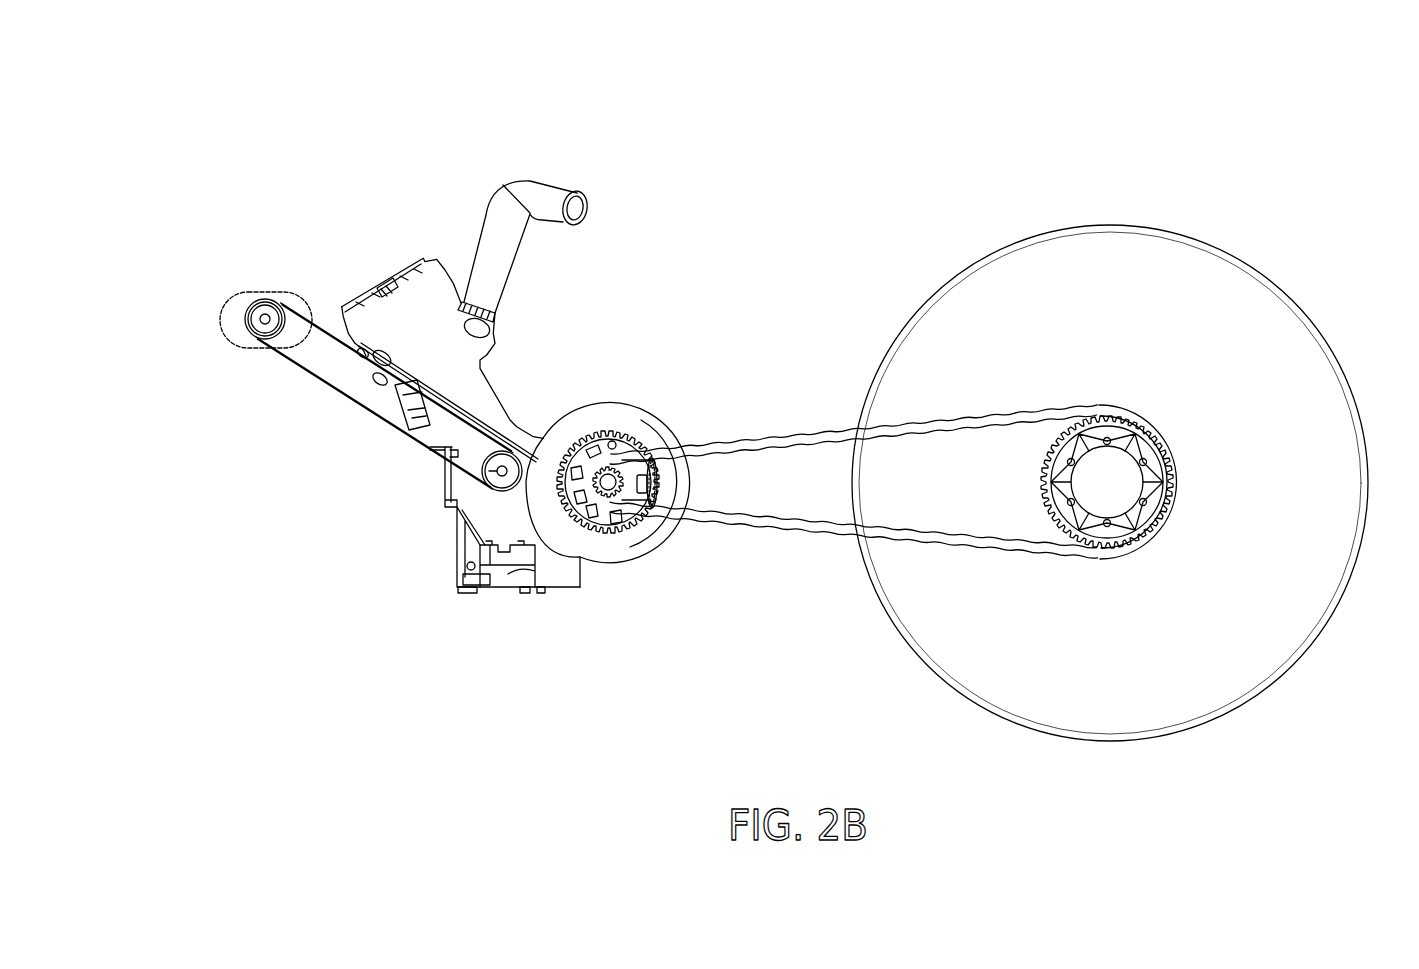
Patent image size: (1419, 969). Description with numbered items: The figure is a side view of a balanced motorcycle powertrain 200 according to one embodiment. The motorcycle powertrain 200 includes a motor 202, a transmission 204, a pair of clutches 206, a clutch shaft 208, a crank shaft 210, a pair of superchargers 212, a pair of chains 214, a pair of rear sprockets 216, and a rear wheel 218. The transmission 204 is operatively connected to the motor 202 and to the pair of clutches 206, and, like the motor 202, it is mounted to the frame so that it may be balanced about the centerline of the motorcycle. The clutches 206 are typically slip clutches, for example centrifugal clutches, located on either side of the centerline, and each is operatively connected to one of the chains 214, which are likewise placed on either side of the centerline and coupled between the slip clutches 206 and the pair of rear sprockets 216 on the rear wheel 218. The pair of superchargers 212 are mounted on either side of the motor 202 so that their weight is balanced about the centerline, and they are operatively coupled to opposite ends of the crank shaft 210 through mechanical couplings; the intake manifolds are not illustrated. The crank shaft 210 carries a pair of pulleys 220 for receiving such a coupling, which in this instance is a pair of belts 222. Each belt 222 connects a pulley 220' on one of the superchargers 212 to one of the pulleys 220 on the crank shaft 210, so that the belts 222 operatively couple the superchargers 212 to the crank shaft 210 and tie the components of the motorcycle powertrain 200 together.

The motorcycle powertrain 200 is at (258, 95).
The motor 202 is at (492, 395).
The transmission 204 is at (607, 545).
The pair of clutches 206 is at (640, 545).
The clutch shaft 208 is at (609, 478).
The crank shaft 210 is at (447, 478).
The pair of superchargers 212 is at (265, 293).
The pair of chains 214 is at (790, 535).
The pair of rear sprockets 216 is at (1108, 552).
The rear wheel 218 is at (1108, 222).
The pair of pulleys 220 is at (450, 497).
The pulley 220' is at (269, 351).
The pair of belts 222 is at (330, 386).